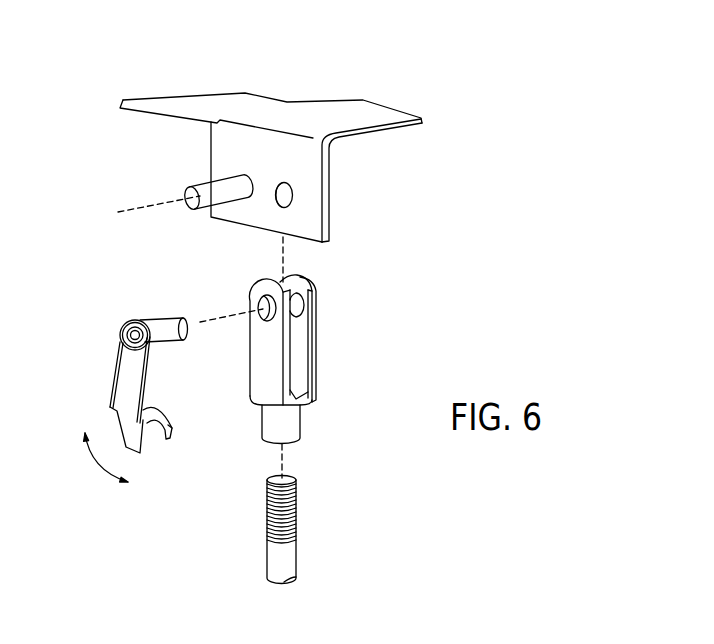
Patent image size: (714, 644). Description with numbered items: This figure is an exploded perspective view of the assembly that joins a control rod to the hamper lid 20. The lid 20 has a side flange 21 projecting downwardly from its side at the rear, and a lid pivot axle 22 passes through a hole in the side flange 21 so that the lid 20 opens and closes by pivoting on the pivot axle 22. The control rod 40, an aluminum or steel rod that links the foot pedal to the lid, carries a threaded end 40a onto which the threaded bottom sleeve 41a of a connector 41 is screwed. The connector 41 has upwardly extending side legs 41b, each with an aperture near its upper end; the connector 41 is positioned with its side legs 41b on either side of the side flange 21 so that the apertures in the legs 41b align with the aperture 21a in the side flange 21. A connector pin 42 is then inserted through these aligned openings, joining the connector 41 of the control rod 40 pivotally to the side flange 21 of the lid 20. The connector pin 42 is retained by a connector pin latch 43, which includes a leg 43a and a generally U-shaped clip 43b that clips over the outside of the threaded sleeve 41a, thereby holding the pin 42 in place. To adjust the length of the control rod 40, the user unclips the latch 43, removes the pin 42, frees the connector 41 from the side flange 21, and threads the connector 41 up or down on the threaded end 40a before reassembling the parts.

The hamper lid 20 is at (271, 144).
The side flange 21 is at (306, 182).
The aperture 21a is at (295, 197).
The lid pivot axle 22 is at (203, 185).
The control rod 40 is at (327, 530).
The threaded end 40a is at (295, 507).
The connector 41 is at (292, 359).
The threaded bottom sleeve 41a is at (295, 421).
The side leg 41b is at (317, 300).
The connector pin 42 is at (167, 320).
The connector pin latch 43 is at (126, 406).
The leg 43a is at (145, 382).
The U-shaped clip 43b is at (170, 432).